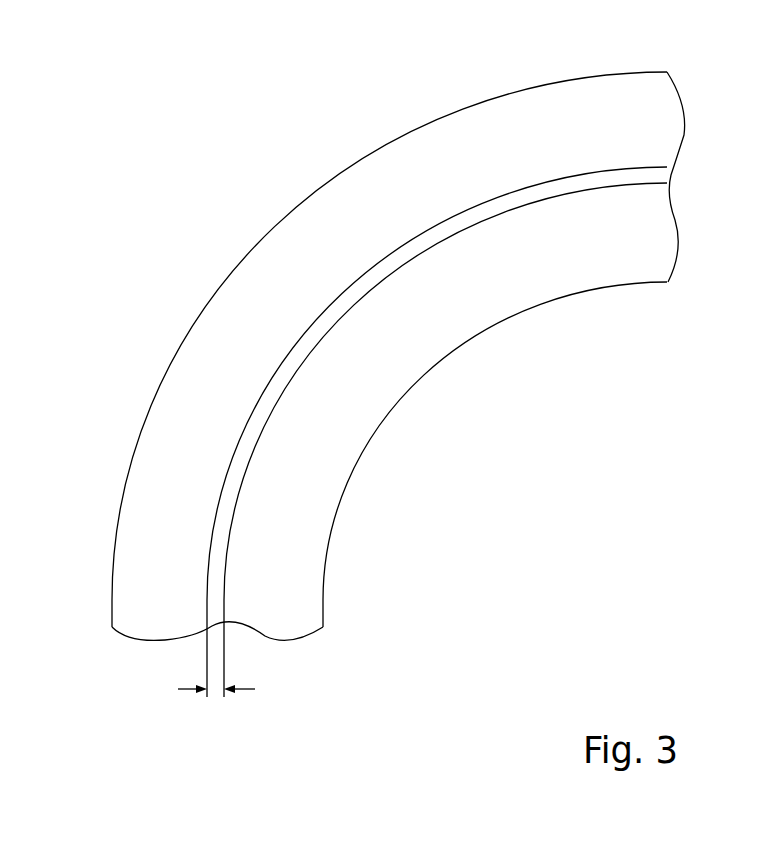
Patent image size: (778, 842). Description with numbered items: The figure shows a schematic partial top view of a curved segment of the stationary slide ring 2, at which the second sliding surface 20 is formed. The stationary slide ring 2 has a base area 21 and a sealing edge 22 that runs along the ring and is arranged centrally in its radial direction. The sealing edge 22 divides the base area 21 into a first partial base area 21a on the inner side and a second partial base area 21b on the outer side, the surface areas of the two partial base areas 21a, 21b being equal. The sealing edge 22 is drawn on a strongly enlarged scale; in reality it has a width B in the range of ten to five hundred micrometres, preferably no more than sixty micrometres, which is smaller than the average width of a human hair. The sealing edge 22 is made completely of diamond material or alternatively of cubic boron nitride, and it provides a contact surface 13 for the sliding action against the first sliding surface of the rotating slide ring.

The stationary slide ring 2 is at (200, 176).
The second sliding surface 20 is at (110, 312).
The base area 21 is at (360, 198).
The first partial base area 21a is at (500, 302).
The second partial base area 21b is at (460, 132).
The sealing edge 22 is at (581, 183).
The contact surface 13 is at (277, 403).
The width B is at (215, 692).